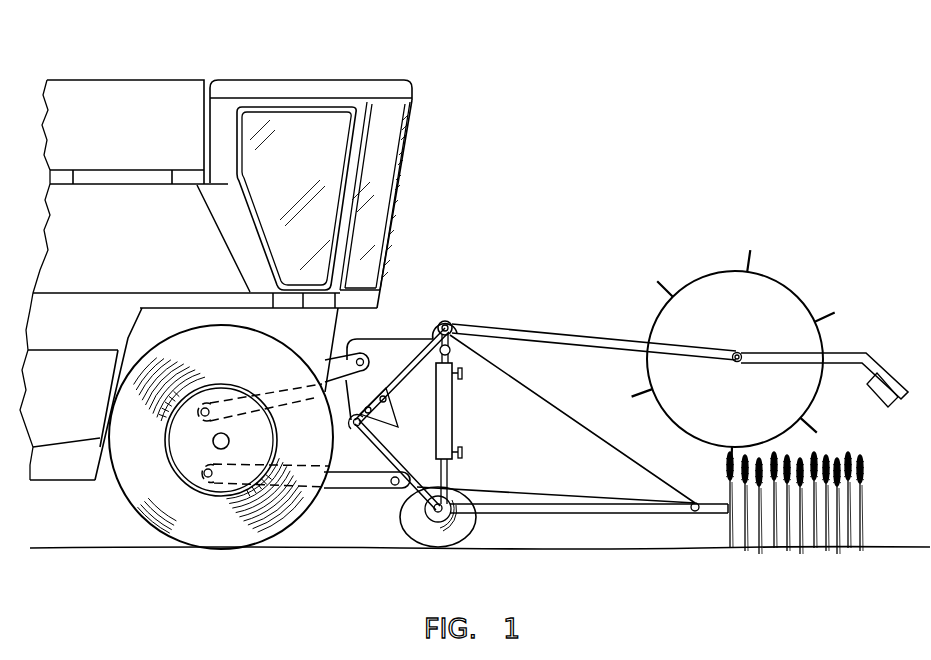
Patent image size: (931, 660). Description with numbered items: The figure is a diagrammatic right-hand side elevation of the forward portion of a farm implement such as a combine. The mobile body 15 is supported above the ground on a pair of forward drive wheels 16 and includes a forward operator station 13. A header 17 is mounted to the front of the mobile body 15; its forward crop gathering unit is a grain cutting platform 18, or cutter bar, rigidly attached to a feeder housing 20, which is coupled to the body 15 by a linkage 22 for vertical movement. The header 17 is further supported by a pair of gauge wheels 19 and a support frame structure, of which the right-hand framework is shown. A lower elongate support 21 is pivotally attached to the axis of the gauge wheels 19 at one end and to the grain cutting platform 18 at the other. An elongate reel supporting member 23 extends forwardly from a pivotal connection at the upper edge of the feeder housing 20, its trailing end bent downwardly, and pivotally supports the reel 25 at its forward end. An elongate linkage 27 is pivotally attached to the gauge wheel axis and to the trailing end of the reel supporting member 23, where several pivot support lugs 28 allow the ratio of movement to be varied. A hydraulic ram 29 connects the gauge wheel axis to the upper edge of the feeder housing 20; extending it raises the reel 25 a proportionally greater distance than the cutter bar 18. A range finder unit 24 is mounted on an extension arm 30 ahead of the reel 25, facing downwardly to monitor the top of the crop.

The forward operator station 13 is at (388, 90).
The mobile body 15 is at (176, 66).
The forward drive wheels 16 is at (135, 506).
The header 17 is at (541, 294).
The grain cutting platform 18 is at (705, 524).
The gauge wheels 19 is at (420, 528).
The feeder housing 20 is at (393, 340).
The lower elongate support 21 is at (534, 515).
The linkage 22 is at (338, 362).
The reel supporting member 23 is at (564, 338).
The range finder unit 24 is at (883, 406).
The reel 25 is at (790, 287).
The elongate linkage 27 is at (388, 456).
The pivot support lugs 28 is at (392, 412).
The hydraulic ram 29 is at (452, 413).
The extension arm 30 is at (833, 355).